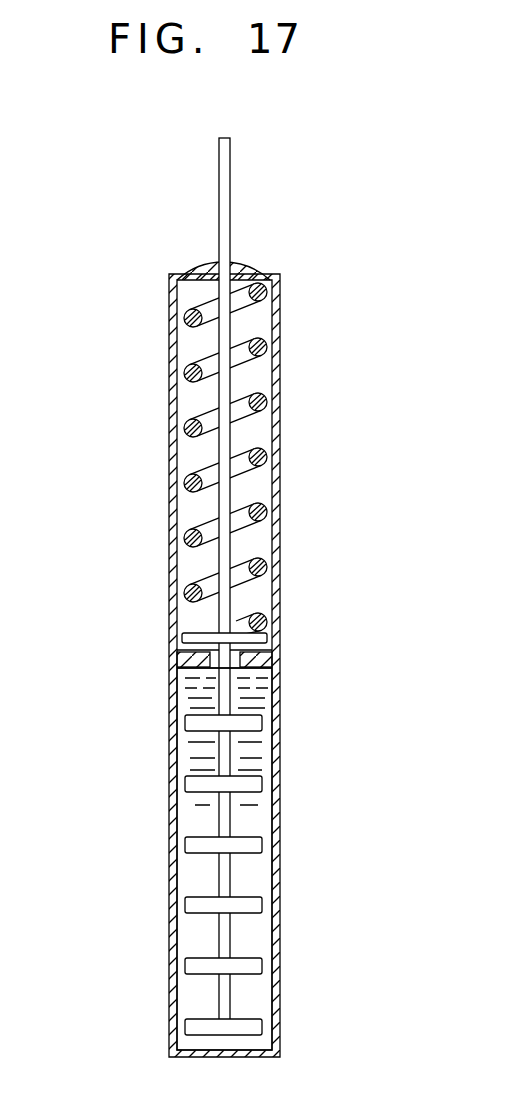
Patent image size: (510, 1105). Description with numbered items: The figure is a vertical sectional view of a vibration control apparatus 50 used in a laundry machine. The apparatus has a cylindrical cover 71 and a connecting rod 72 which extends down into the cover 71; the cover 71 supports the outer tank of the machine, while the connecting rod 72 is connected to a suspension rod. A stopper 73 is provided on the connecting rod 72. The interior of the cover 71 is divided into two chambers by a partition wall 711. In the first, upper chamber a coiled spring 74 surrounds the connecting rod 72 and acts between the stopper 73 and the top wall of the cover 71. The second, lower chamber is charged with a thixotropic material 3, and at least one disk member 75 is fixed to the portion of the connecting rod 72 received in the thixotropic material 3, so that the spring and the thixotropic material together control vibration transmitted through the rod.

The vibration control apparatus 50 is at (163, 630).
The cylindrical cover 71 is at (280, 378).
The connecting rod 72 is at (231, 214).
The stopper 73 is at (272, 640).
The coiled spring 74 is at (265, 555).
The partition wall 711 is at (271, 660).
The disk member 75 is at (250, 737).
The thixotropic material 3 is at (262, 813).